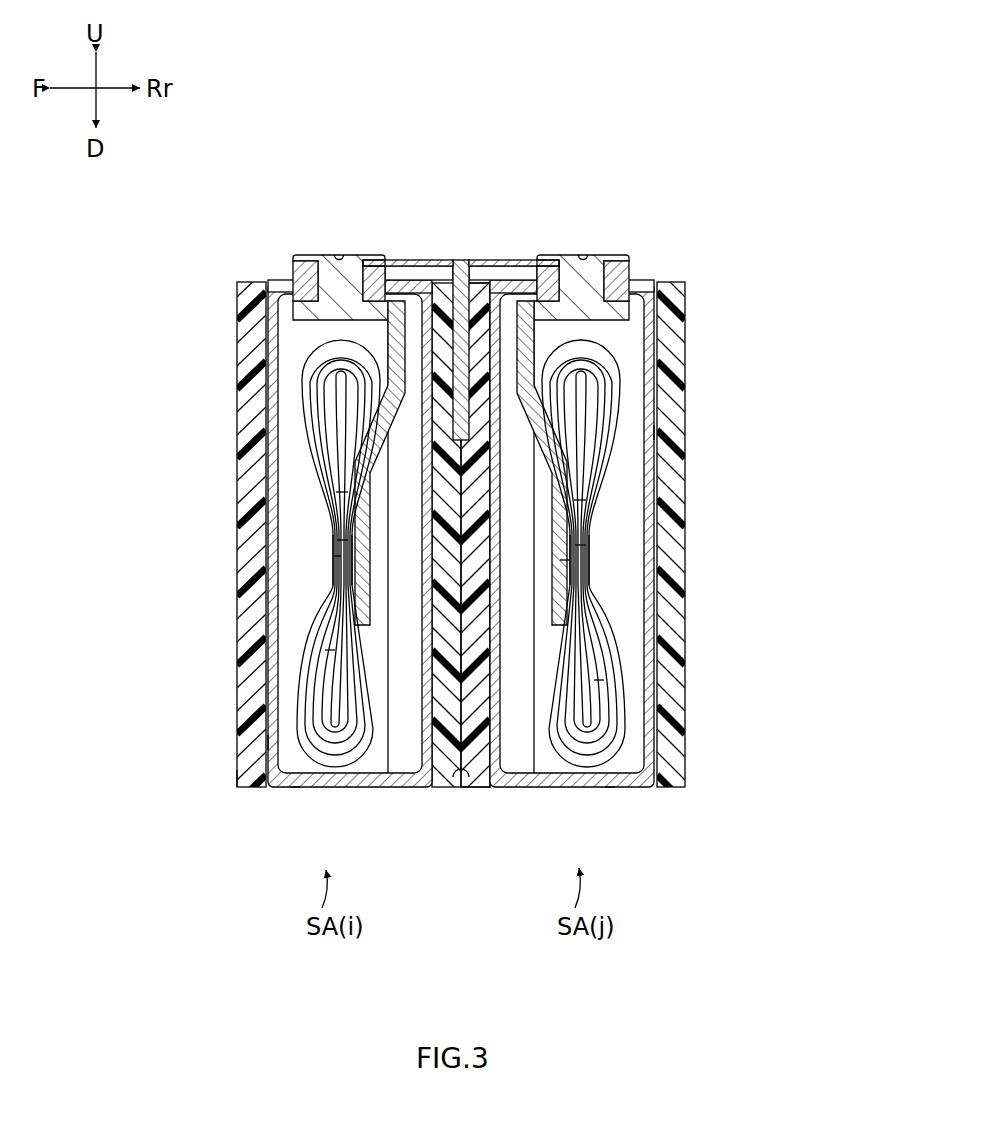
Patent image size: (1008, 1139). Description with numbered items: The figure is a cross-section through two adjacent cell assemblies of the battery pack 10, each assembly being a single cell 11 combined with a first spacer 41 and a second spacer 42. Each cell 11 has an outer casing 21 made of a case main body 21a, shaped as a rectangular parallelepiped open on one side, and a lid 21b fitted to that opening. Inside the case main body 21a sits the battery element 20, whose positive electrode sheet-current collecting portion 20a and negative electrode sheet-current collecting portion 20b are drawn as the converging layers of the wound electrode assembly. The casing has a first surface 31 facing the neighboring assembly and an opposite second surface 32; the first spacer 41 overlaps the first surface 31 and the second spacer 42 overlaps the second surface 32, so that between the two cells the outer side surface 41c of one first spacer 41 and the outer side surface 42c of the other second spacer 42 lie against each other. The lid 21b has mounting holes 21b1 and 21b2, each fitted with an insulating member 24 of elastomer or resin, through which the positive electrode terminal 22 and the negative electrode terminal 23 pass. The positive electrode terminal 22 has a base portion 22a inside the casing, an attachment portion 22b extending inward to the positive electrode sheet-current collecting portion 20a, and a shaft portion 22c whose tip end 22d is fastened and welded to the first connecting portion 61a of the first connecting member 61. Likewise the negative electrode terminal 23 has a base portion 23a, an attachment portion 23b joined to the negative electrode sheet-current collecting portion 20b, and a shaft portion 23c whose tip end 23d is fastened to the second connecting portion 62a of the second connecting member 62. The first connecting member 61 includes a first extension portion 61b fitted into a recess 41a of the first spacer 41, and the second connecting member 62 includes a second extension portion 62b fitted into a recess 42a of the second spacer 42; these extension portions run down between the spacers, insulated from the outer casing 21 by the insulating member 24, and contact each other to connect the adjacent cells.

The battery pack 10 is at (684, 113).
The cell 11 is at (296, 791).
The battery element 20 is at (296, 603).
The positive electrode sheet-current collecting portion 20a is at (345, 541).
The negative electrode sheet-current collecting portion 20b is at (586, 546).
The outer casing 21 is at (274, 791).
The case main body 21a is at (272, 742).
The lid 21b is at (282, 287).
The mounting hole 21b1 is at (346, 254).
The mounting hole 21b2 is at (586, 254).
The positive electrode terminal 22 is at (333, 251).
The base portion 22a is at (312, 321).
The attachment portion 22b is at (400, 626).
The shaft portion 22c is at (376, 266).
The tip end 22d is at (305, 261).
The negative electrode terminal 23 is at (595, 251).
The base portion 23a is at (610, 321).
The attachment portion 23b is at (522, 626).
The shaft portion 23c is at (546, 266).
The tip end 23d is at (616, 261).
The insulating member 24 is at (298, 278).
The first surface 31 is at (336, 556).
The second surface 32 is at (330, 650).
The first spacer 41 is at (683, 304).
The recess 41a is at (436, 400).
The outer side surface 41c is at (468, 790).
The second spacer 42 is at (240, 304).
The recess 42a is at (487, 410).
The outer side surface 42c is at (240, 768).
The first connecting member 61 is at (457, 259).
The first connecting portion 61a is at (368, 260).
The first extension portion 61b is at (341, 493).
The second connecting member 62 is at (481, 259).
The second connecting portion 62a is at (552, 260).
The second extension portion 62b is at (582, 500).